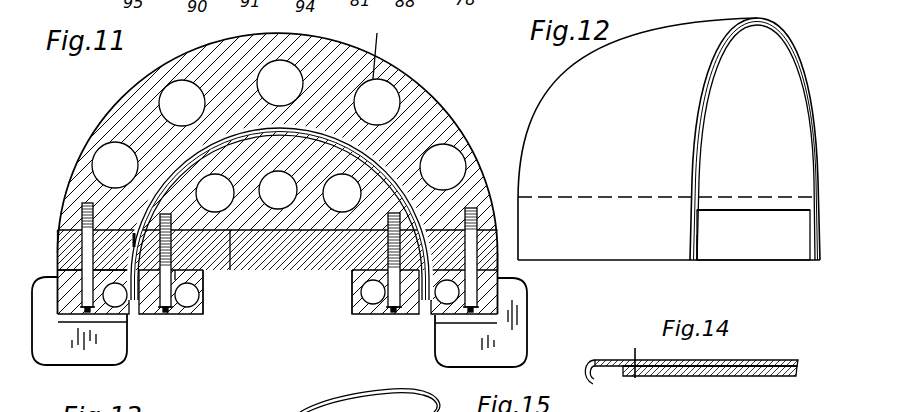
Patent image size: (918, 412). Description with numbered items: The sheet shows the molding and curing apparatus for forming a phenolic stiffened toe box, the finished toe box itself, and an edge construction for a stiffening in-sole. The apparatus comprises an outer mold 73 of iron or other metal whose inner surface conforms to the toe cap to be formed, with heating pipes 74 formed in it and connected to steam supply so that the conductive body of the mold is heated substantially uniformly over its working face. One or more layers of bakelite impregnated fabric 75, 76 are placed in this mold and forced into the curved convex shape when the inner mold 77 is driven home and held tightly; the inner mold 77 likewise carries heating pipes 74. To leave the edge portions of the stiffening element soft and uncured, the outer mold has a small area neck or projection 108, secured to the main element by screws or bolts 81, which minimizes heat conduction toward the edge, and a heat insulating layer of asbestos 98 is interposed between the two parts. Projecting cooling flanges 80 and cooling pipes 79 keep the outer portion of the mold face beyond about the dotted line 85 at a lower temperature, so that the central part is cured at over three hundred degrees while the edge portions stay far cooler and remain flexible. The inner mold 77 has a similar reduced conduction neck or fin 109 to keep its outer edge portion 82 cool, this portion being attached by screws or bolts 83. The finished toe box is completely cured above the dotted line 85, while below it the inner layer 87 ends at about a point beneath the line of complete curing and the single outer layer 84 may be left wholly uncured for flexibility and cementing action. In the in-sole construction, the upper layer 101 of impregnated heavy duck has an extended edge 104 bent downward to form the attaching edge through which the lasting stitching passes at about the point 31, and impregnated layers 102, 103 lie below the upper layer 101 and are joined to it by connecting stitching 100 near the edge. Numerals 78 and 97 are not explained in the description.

In FIG. 14, the lasting stitching line 31 is at (685, 368).
In FIG. 11, the outer mold 73 is at (420, 92).
In FIG. 11, the heating pipes 74 is at (292, 76).
In FIG. 11, the bakelite impregnated fabric layer 75 is at (385, 157).
In FIG. 12, the bakelite impregnated fabric layer 75 is at (717, 97).
In FIG. 11, the bakelite impregnated fabric layer 76 is at (388, 162).
In FIG. 12, the bakelite impregnated fabric layer 76 is at (707, 140).
In FIG. 11, the inner mold 77 is at (302, 218).
In FIG. 11, the housing block 78 is at (115, 314).
In FIG. 11, the cooling pipes 79 is at (190, 300).
In FIG. 11, the cooling flanges 80 is at (123, 353).
In FIG. 11, the screws or bolts 81 is at (83, 243).
In FIG. 11, the outer edge portion 82 is at (203, 275).
In FIG. 11, the screws or bolts 83 is at (180, 287).
In FIG. 11, the single outer layer 84 is at (103, 267).
In FIG. 12, the single outer layer 84 is at (692, 240).
In FIG. 11, the dotted line 85 is at (80, 187).
In FIG. 12, the dotted line 85 is at (772, 200).
In FIG. 11, the inner layer 87 is at (133, 247).
In FIG. 12, the inner layer 87 is at (740, 212).
In FIG. 11, the ring web 97 is at (265, 255).
In FIG. 11, the layer of asbestos 98 is at (502, 268).
In FIG. 14, the connecting stitching 100 is at (620, 354).
In FIG. 14, the upper layer 101 is at (762, 362).
In FIG. 14, the impregnated layer 102 is at (752, 376).
In FIG. 14, the impregnated layer 103 is at (708, 376).
In FIG. 14, the extended edge 104 is at (593, 383).
In FIG. 11, the neck or projection 108 is at (397, 315).
In FIG. 11, the neck or fin 109 is at (360, 270).